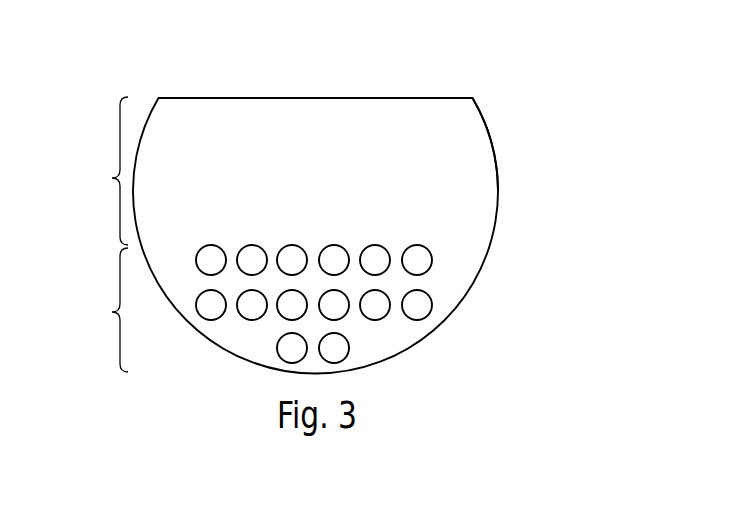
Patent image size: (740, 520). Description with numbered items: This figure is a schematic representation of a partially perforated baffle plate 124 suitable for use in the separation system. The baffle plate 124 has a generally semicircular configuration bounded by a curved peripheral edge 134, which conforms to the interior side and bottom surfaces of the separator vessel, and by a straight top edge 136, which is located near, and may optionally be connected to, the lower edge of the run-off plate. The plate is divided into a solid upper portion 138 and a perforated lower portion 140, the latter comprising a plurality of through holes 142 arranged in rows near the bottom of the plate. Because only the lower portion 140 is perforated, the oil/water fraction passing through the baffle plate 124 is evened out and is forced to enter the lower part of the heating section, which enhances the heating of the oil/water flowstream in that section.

The partially perforated baffle plate 124 is at (520, 98).
The curved peripheral edge 134 is at (498, 188).
The straight top edge 136 is at (322, 98).
The solid upper portion 138 is at (99, 171).
The perforated lower portion 140 is at (99, 310).
The through holes 142 is at (432, 304).